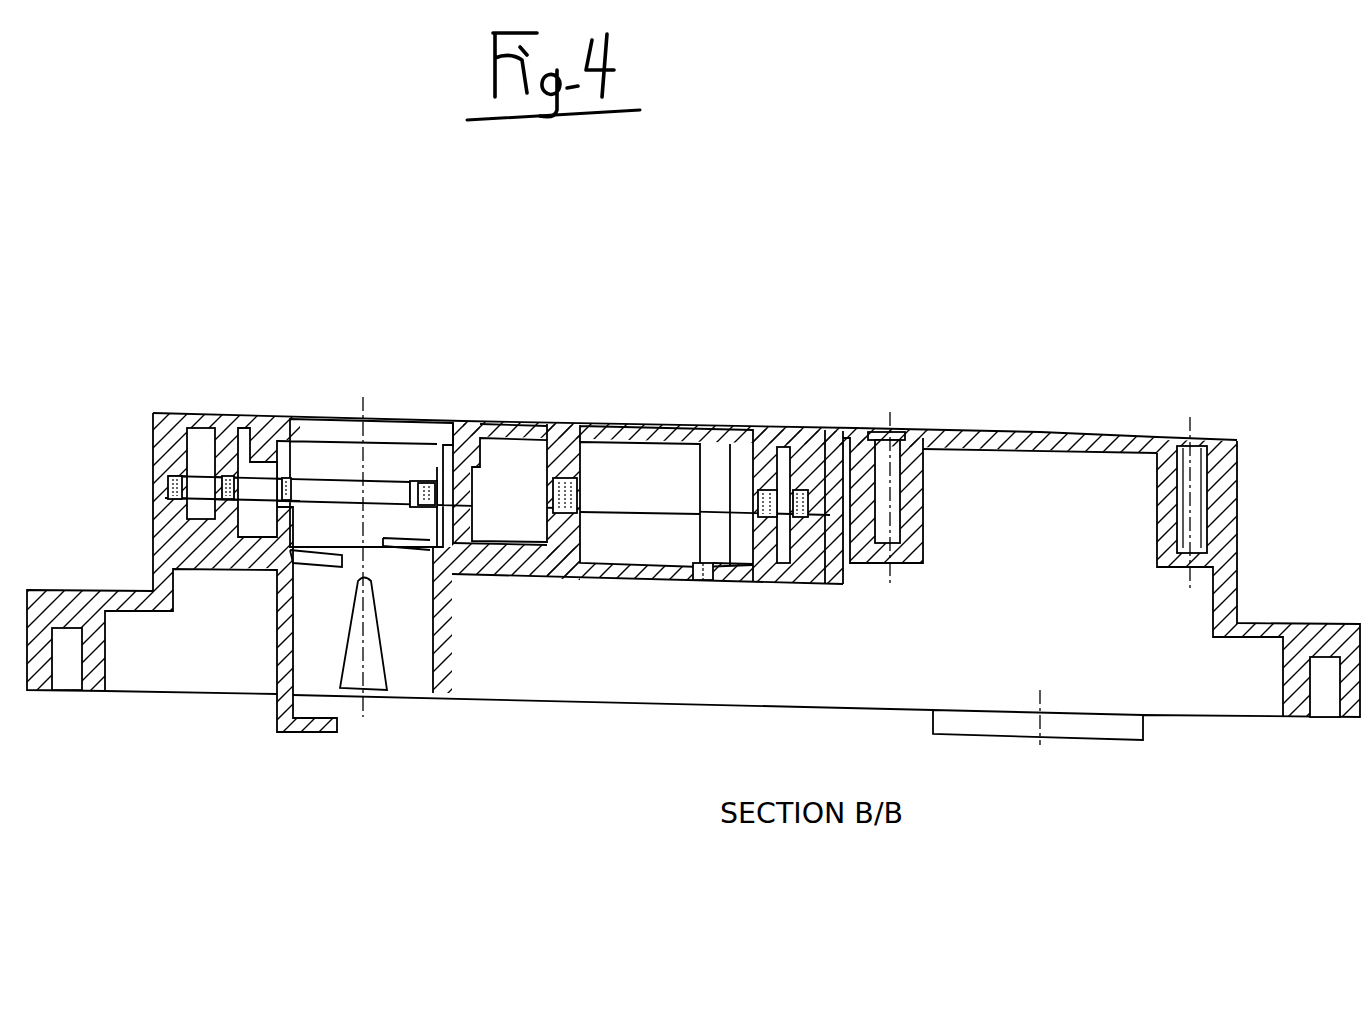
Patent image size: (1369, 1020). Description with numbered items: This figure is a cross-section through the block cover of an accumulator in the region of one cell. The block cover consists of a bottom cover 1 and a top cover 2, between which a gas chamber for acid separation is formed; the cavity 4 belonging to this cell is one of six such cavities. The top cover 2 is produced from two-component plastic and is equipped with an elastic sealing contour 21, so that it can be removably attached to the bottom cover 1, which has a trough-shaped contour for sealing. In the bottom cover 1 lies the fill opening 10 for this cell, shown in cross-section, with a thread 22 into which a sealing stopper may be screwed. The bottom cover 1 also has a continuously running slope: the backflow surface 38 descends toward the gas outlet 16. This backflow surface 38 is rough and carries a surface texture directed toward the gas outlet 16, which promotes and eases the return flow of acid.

The bottom cover 1 is at (602, 829).
The top cover 2 is at (565, 432).
The cavity 4 is at (640, 462).
The fill opening 10 is at (322, 463).
The gas outlet 16 is at (707, 582).
The elastic sealing contour 21 is at (168, 488).
The thread 22 is at (413, 553).
The backflow surface 38 is at (510, 543).